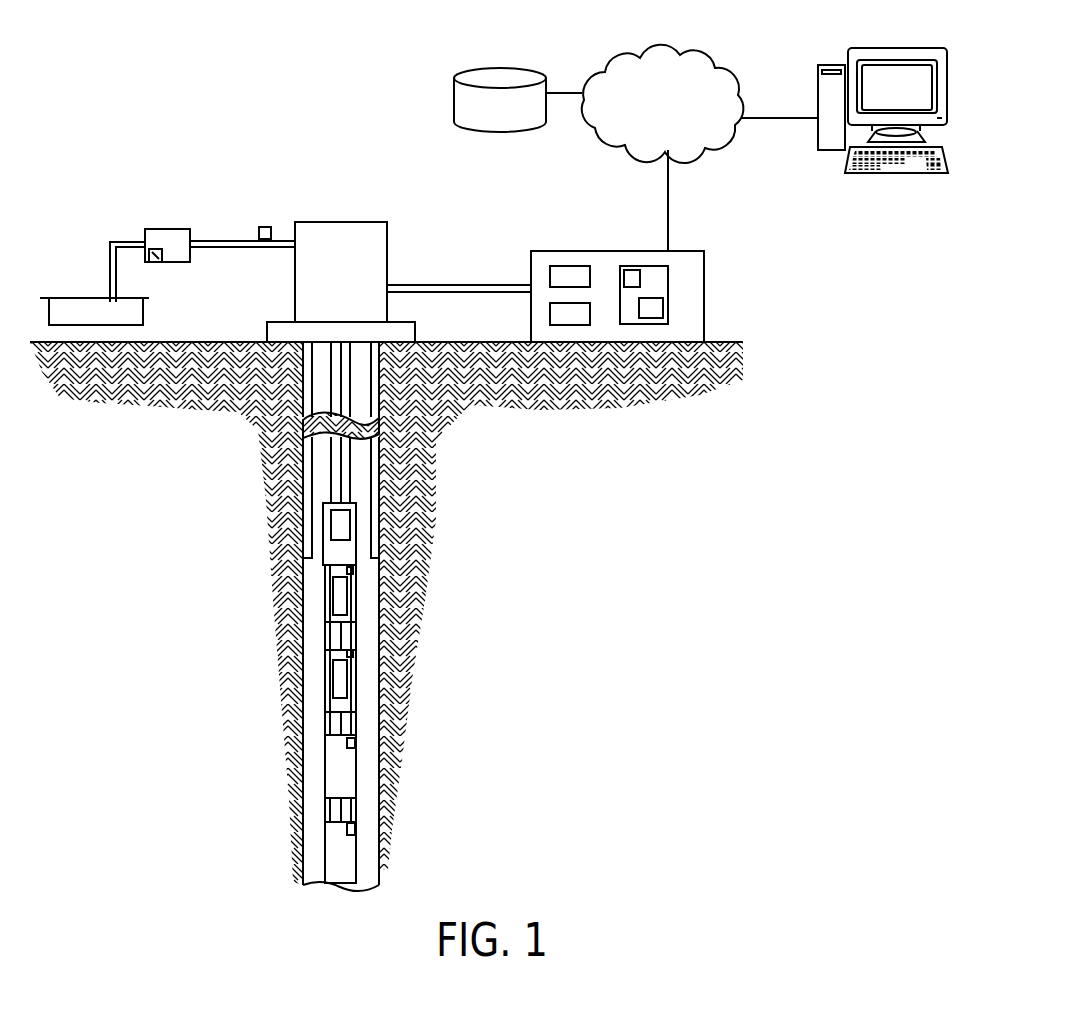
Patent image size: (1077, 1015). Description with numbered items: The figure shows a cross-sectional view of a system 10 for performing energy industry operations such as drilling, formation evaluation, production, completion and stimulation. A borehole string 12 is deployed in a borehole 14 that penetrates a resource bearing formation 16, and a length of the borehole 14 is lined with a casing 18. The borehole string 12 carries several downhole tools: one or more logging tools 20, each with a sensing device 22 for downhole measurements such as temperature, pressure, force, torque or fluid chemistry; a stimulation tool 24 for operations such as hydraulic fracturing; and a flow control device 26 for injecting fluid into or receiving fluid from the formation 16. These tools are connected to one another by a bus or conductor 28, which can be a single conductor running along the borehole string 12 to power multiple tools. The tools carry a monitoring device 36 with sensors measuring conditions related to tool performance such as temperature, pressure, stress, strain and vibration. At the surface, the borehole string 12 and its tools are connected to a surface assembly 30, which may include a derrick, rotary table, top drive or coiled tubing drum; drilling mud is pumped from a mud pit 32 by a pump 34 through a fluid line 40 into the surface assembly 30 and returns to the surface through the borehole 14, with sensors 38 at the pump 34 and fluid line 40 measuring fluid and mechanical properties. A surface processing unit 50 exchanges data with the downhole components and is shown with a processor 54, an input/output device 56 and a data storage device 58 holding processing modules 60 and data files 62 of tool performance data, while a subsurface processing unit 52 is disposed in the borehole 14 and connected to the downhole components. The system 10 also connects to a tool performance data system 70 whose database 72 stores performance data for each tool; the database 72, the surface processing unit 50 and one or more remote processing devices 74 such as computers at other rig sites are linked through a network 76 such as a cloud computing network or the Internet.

The system 10 is at (228, 150).
The borehole string 12 is at (355, 460).
The borehole 14 is at (303, 376).
The formation 16 is at (410, 512).
The casing 18 is at (372, 388).
The logging tool 20 is at (333, 596).
The sensing device 22 is at (356, 600).
The stimulation tool 24 is at (340, 773).
The flow control device 26 is at (340, 858).
The conductor 28 is at (356, 724).
The surface assembly 30 is at (345, 228).
The mud pit 32 is at (70, 302).
The pump 34 is at (170, 233).
The monitoring device 36 is at (349, 570).
The sensor 38 is at (266, 227).
The fluid line 40 is at (234, 248).
The surface processing unit 50 is at (683, 335).
The subsurface processing unit 52 is at (330, 525).
The processor 54 is at (570, 275).
The input/output device 56 is at (570, 313).
The data storage device 58 is at (656, 280).
The processing module 60 is at (637, 275).
The data file 62 is at (655, 313).
The tool performance data system 70 is at (826, 215).
The database 72 is at (502, 80).
The remote processing device 74 is at (833, 65).
The network 76 is at (668, 58).